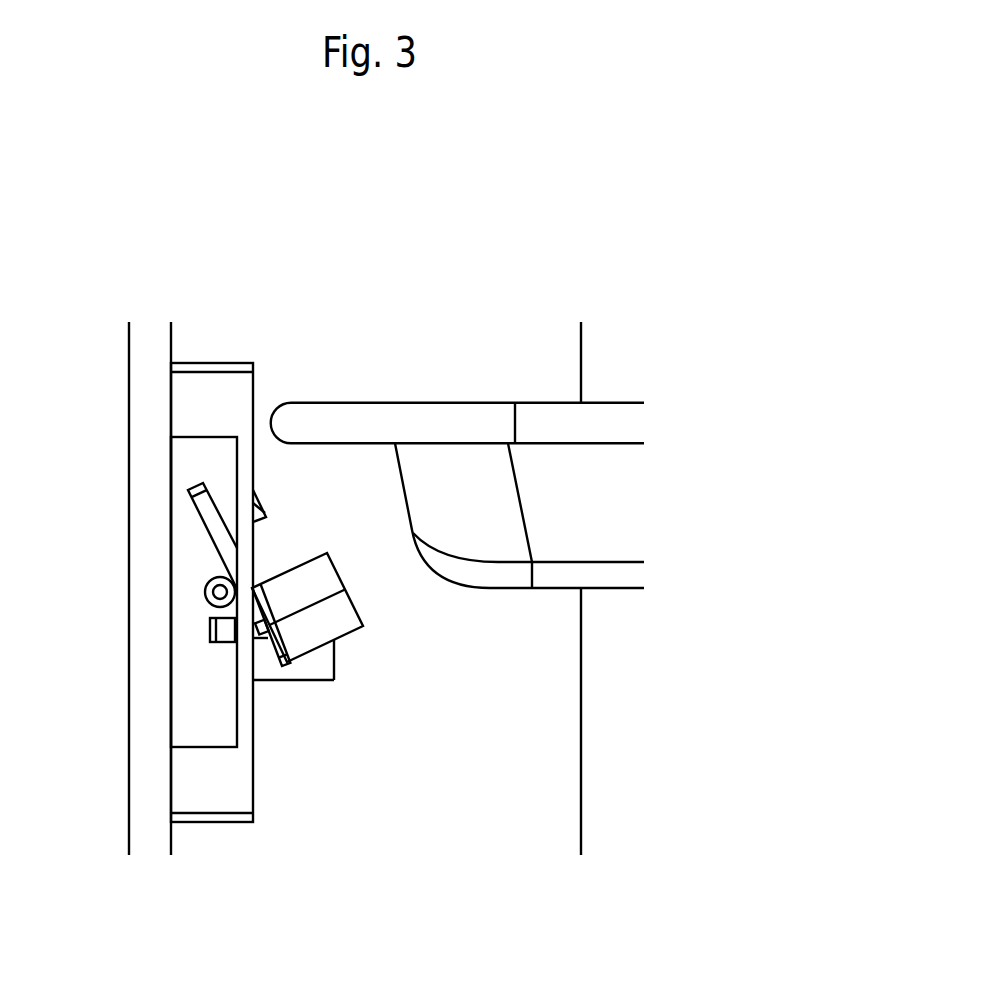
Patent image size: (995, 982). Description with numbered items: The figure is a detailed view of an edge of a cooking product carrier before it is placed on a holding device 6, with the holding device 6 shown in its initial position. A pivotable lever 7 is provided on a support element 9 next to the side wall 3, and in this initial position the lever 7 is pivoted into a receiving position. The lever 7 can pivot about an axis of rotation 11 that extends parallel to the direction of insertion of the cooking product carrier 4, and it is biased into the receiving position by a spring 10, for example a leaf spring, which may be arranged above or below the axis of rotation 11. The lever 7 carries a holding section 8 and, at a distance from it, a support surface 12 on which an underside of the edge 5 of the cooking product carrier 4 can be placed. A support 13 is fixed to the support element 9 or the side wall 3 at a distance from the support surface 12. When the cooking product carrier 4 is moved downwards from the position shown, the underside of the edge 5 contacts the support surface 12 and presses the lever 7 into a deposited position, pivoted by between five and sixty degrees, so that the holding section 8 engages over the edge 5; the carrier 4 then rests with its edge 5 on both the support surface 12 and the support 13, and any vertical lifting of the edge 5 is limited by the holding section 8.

The side wall 3 is at (148, 381).
The cooking product carrier 4 is at (558, 542).
The edge 5 is at (297, 423).
The holding device 6 is at (170, 484).
The pivotable lever 7 is at (206, 503).
The holding section 8 is at (264, 513).
The support element 9 is at (204, 393).
The spring 10 is at (210, 632).
The axis of rotation 11 is at (218, 593).
The support surface 12 is at (312, 585).
The support 13 is at (322, 663).